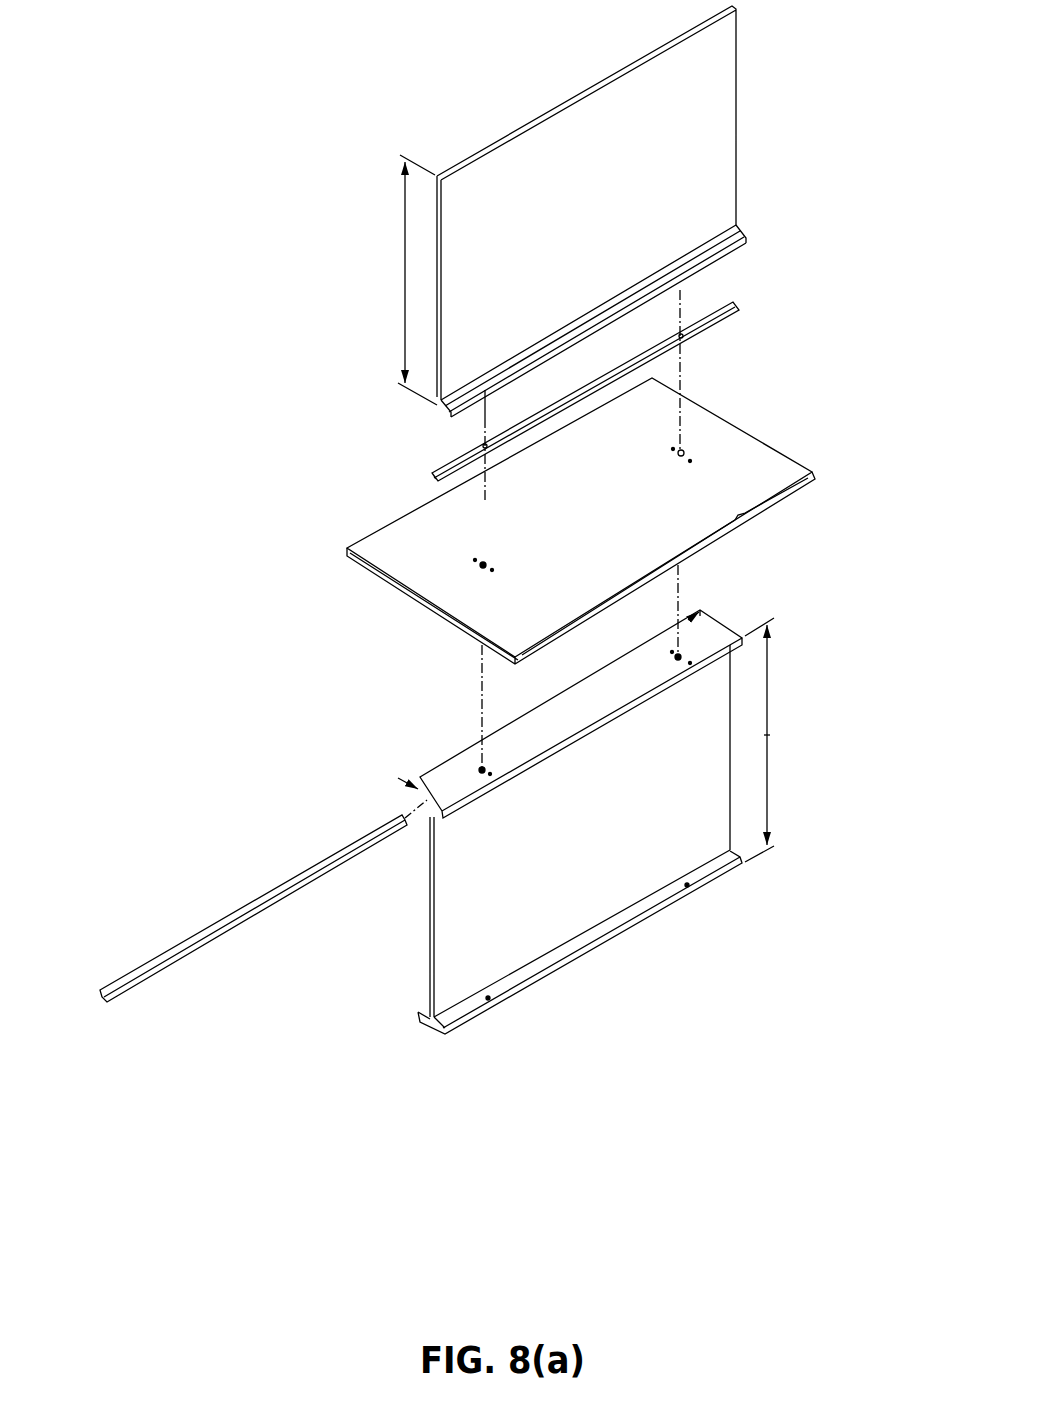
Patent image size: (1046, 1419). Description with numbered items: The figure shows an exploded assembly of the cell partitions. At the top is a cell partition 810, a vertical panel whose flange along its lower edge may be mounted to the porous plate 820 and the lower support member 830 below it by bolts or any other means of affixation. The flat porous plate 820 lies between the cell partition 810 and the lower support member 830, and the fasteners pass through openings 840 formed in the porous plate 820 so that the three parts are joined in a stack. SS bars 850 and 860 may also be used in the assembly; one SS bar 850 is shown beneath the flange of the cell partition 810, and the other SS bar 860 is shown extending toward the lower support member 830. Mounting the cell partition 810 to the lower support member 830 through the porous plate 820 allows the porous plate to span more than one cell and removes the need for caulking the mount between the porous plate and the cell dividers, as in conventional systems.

The cell partitions 810 is at (583, 223).
The porous plate 820 is at (608, 511).
The lower support member 830 is at (598, 845).
The openings 840 is at (686, 450).
The SS bar 850 is at (450, 465).
The SS bar 860 is at (212, 920).